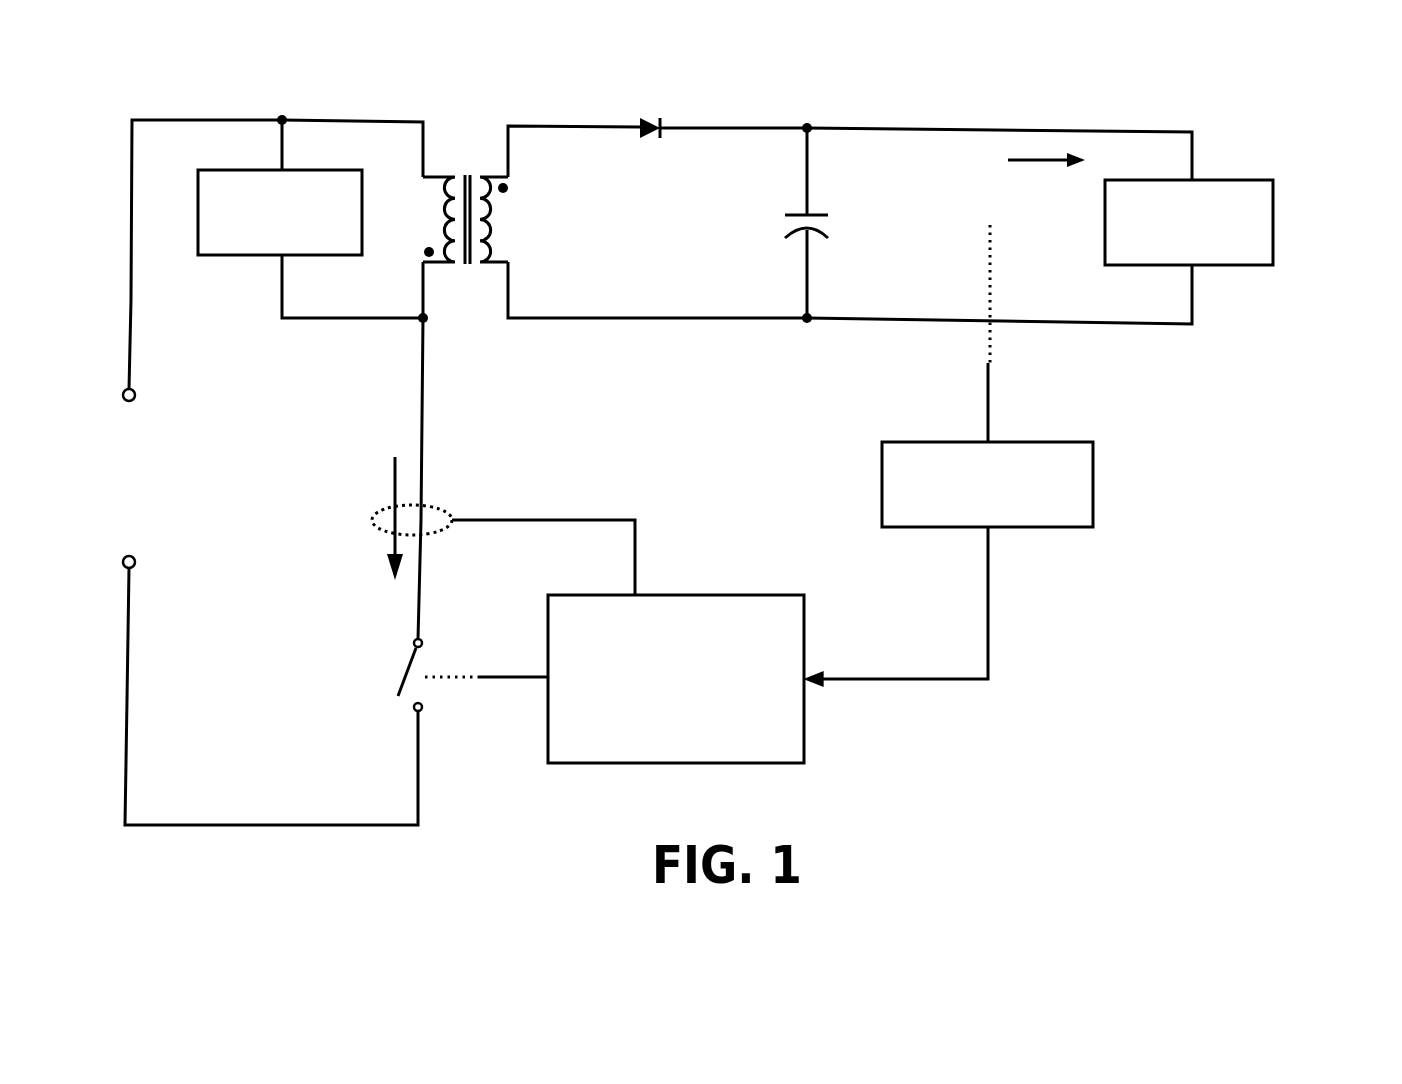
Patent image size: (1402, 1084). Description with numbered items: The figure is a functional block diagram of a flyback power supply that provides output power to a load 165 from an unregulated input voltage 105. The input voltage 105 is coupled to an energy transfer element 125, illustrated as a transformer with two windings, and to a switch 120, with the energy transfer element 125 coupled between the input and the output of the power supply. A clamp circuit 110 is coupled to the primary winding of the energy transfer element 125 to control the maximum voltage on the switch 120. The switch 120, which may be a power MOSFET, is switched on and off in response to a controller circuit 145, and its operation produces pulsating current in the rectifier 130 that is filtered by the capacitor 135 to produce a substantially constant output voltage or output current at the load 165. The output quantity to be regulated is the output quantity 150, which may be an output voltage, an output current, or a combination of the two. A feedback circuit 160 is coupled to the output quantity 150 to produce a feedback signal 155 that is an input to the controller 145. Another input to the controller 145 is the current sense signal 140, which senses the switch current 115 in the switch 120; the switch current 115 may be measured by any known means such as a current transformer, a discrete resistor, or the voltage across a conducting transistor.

The input voltage V_IN 105 is at (92, 472).
The clamp circuit 110 is at (248, 262).
The current I_D 115 is at (377, 455).
The switch S1 120 is at (397, 653).
The energy transfer element T1 125 is at (468, 293).
The rectifier D1 130 is at (628, 133).
The capacitor C1 135 is at (793, 200).
The current sense signal 140 is at (632, 510).
The controller circuit 145 is at (785, 590).
The output quantity U_O 150 is at (978, 396).
The feedback signal U_FB 155 is at (997, 625).
The feedback circuit 160 is at (1103, 487).
The load 165 is at (1288, 230).